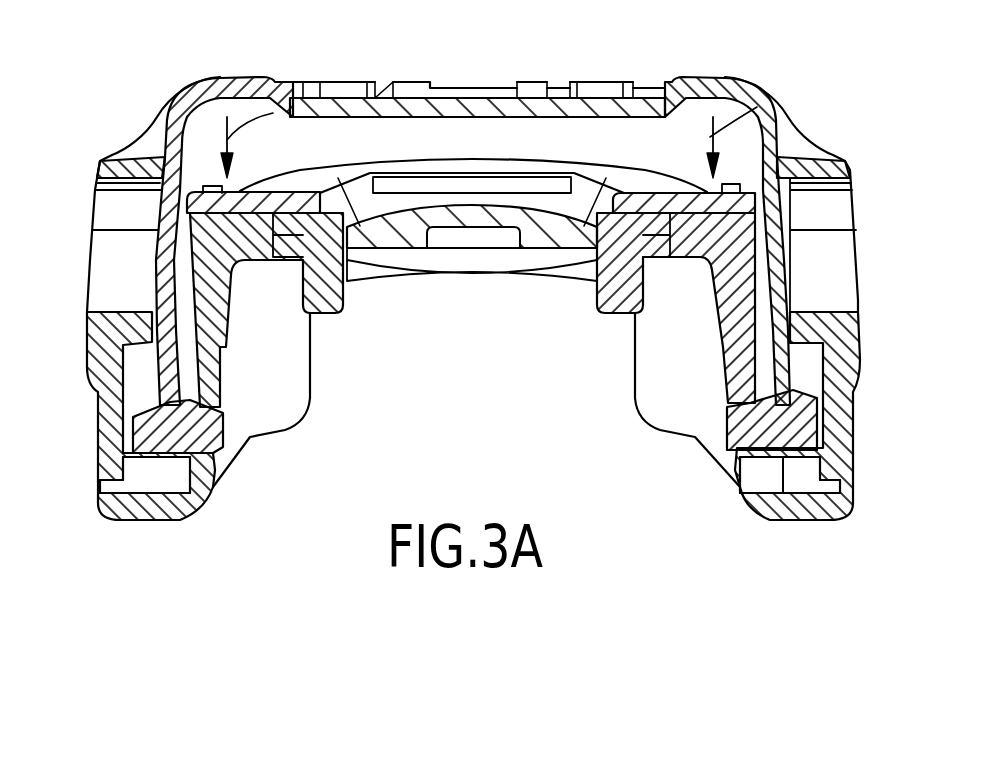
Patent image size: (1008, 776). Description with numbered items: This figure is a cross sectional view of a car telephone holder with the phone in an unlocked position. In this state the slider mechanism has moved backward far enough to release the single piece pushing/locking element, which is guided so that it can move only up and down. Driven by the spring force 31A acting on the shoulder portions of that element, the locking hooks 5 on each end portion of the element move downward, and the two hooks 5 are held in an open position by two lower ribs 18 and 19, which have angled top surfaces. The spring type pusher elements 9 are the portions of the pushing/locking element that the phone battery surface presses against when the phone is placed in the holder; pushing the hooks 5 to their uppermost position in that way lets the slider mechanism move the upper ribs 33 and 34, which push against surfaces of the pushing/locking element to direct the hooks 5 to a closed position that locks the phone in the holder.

The spring force 31A is at (279, 82).
The spring type pusher elements 9 is at (343, 313).
The hooks 5 is at (225, 423).
The upper rib 33 is at (143, 413).
The upper rib 34 is at (812, 410).
The lower rib 18 is at (188, 478).
The lower rib 19 is at (770, 468).